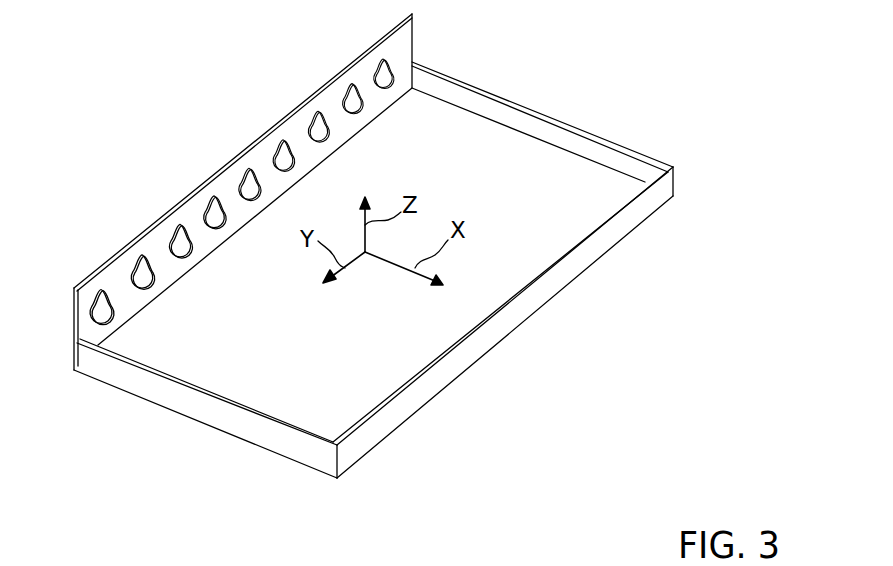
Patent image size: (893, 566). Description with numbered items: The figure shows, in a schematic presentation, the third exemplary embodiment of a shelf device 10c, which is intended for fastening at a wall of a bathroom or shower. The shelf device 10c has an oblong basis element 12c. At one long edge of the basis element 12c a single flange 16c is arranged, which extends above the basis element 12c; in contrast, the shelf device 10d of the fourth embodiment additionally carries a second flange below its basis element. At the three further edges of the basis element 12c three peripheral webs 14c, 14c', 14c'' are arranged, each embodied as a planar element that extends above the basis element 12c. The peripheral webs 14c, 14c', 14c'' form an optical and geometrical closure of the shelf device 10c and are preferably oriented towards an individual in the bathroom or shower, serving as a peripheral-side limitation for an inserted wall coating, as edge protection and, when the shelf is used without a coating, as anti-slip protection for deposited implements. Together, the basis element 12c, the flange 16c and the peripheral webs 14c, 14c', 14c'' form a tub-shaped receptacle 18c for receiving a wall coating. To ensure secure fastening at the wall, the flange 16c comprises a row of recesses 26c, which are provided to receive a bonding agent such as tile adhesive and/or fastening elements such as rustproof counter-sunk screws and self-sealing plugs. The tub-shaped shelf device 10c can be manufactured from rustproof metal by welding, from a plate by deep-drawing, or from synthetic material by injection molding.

The shelf device 10c is at (142, 113).
The shelf device 10d is at (57, 553).
The basis element 12c is at (478, 280).
The peripheral web 14c is at (519, 322).
The peripheral web 14c' is at (542, 122).
The peripheral web 14c'' is at (205, 417).
The flange 16c is at (170, 229).
The tub-shaped receptacle 18c is at (432, 153).
The recesses 26c is at (280, 167).